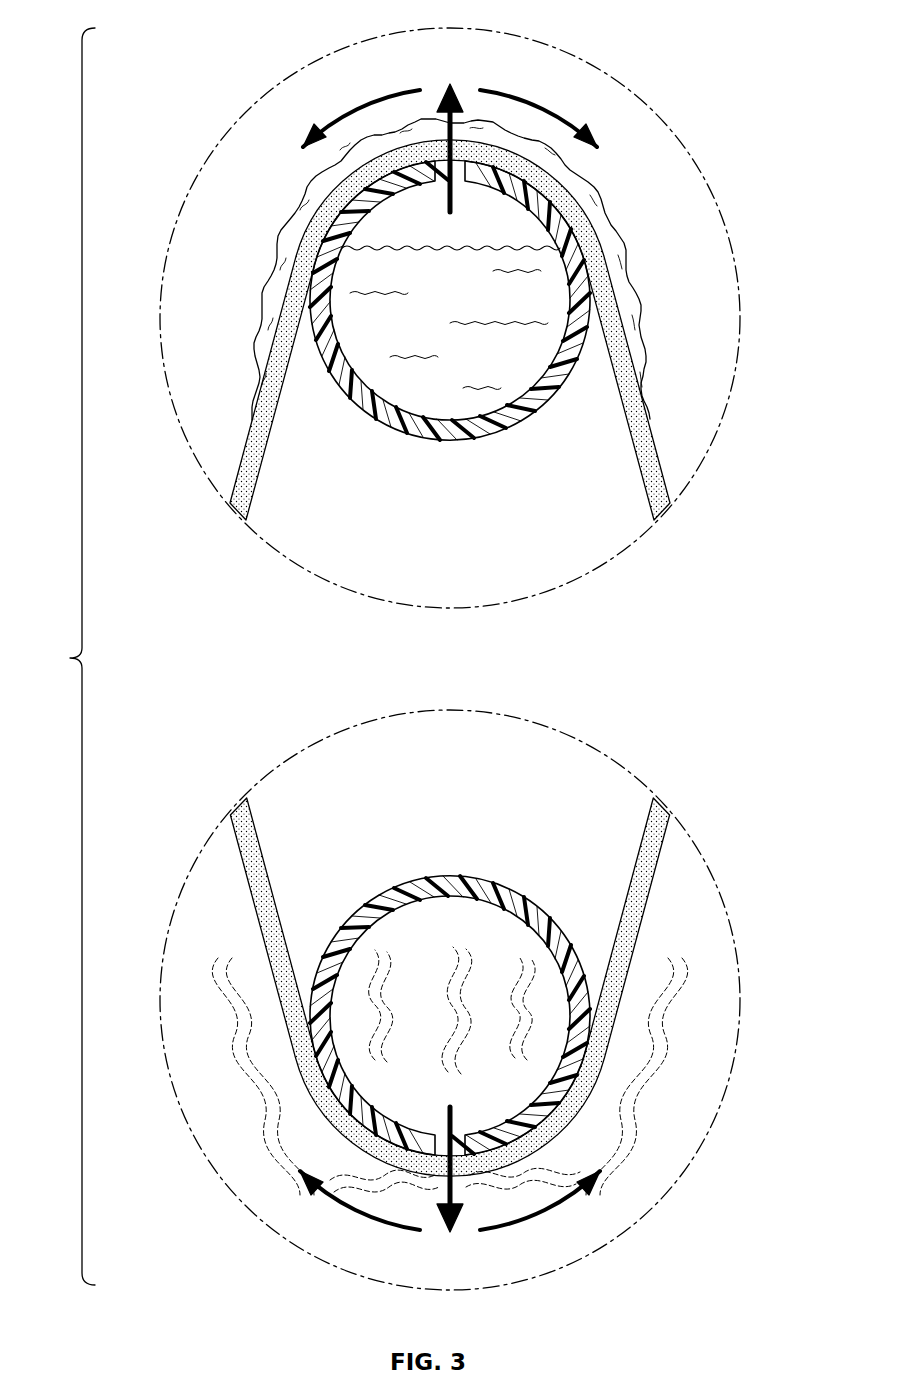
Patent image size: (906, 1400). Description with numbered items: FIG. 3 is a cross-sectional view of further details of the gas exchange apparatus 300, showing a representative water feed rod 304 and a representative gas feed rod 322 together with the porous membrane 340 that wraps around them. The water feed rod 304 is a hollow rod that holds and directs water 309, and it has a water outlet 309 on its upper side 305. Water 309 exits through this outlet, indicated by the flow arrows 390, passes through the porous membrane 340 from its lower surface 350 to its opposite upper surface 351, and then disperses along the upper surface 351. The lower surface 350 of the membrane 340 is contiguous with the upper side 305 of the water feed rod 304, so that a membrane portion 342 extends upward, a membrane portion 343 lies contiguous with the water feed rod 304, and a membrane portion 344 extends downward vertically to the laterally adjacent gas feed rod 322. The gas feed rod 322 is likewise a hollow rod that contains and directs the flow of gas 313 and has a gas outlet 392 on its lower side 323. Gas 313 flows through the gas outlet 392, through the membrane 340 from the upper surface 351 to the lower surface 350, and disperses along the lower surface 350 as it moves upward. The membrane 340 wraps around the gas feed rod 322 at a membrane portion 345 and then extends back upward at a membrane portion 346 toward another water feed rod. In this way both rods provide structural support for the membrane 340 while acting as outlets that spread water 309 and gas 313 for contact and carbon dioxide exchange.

The system 300 is at (56, 656).
The water feed rod 304 is at (450, 444).
The upper side 305 is at (547, 197).
The water 309 is at (265, 248).
The gas 313 is at (527, 953).
The gas feed rod 322 is at (462, 875).
The lower side 323 is at (383, 1137).
The porous membrane 340 is at (672, 453).
The membrane portion 342 is at (258, 441).
The membrane portion 343 is at (413, 152).
The membrane portion 344 is at (655, 472).
The membrane portion 345 is at (494, 1161).
The membrane portion 346 is at (645, 872).
The lower surface 350 is at (630, 440).
The upper surface 351 is at (664, 431).
The flow direction 390 is at (462, 190).
The gas outlet 392 is at (463, 1133).